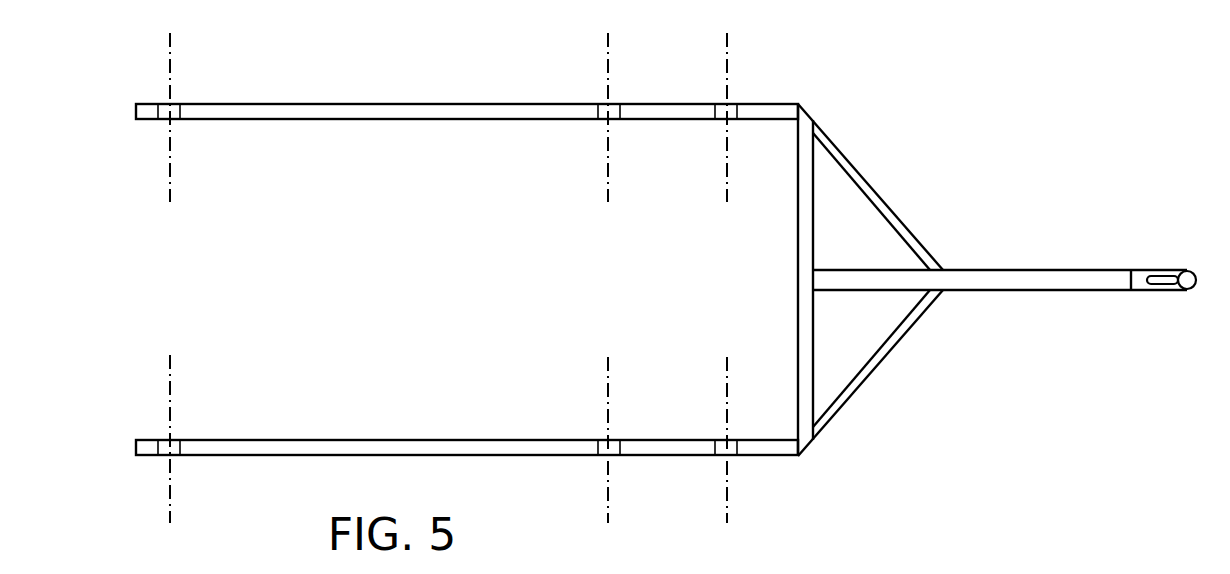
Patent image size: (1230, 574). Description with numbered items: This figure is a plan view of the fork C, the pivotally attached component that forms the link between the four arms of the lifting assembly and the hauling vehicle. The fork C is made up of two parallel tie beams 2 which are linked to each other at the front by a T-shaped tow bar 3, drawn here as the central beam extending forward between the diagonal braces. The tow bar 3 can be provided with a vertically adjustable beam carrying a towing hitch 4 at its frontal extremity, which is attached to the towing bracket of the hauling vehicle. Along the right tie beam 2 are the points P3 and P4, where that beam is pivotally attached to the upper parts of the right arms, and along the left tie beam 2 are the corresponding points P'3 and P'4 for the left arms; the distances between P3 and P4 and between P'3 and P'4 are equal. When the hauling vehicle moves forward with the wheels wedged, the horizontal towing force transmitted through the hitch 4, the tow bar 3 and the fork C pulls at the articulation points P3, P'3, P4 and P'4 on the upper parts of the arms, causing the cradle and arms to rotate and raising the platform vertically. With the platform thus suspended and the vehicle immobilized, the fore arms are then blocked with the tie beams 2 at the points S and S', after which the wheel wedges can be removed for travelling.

The tie beam 2 is at (343, 111).
The T-shaped tow bar 3 is at (973, 280).
The towing hitch 4 is at (1165, 285).
The fork C is at (884, 71).
The blocking point S is at (651, 513).
The blocking point S' is at (563, 52).
The pivot point P3 is at (165, 428).
The pivot point P'3 is at (114, 192).
The pivot point P4 is at (718, 426).
The pivot point P'4 is at (672, 191).